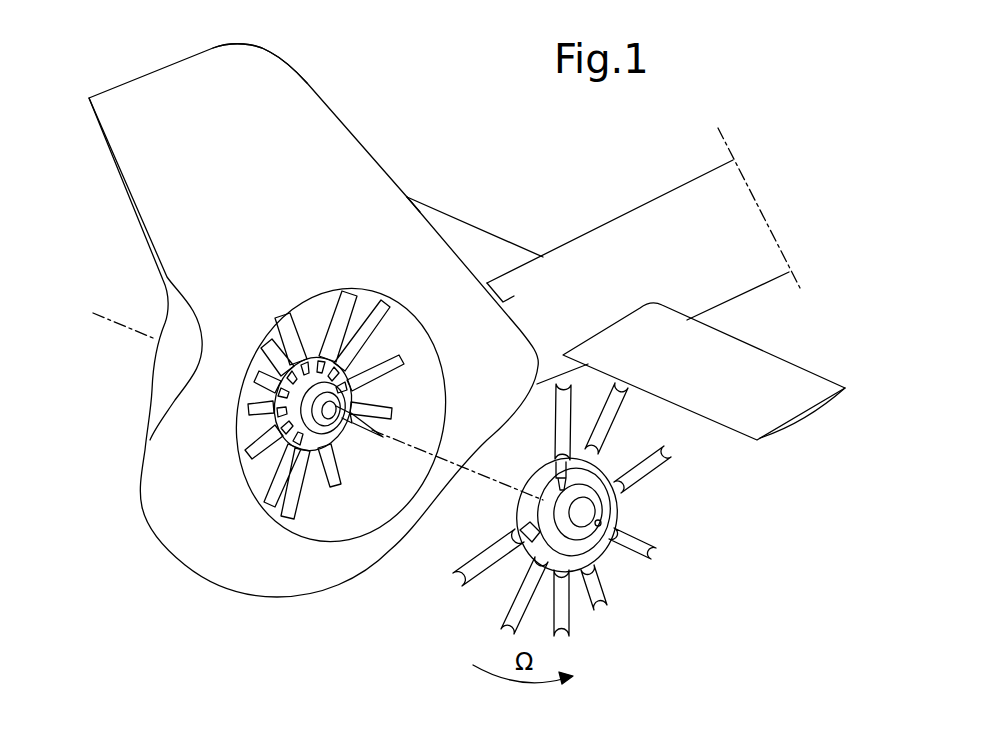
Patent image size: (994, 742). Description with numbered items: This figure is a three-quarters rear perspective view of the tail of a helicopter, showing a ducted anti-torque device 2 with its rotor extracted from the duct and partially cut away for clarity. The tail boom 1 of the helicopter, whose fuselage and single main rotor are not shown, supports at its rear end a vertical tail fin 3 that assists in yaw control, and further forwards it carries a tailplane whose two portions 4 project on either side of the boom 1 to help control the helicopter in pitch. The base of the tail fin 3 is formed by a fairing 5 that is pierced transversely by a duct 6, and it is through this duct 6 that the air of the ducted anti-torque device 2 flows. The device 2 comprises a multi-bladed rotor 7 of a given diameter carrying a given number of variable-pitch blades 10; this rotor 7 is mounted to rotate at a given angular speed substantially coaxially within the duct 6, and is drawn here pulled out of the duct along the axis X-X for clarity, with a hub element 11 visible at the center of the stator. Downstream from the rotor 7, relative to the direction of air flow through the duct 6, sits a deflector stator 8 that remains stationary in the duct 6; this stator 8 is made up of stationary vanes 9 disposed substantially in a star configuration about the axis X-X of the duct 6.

The tail boom 1 is at (641, 212).
The ducted anti-torque device 2 is at (408, 184).
The vertical tail fin 3 is at (290, 86).
The tailplane portions 4 is at (500, 248).
The fairing 5 is at (152, 460).
The duct 6 is at (331, 423).
The multi-bladed rotor 7 is at (585, 509).
The deflector stator 8 is at (299, 495).
The stationary vanes 9 is at (255, 477).
The variable-pitch blades 10 is at (605, 607).
The fan hub 11 is at (292, 335).
The axis X-X of the duct X is at (117, 322).